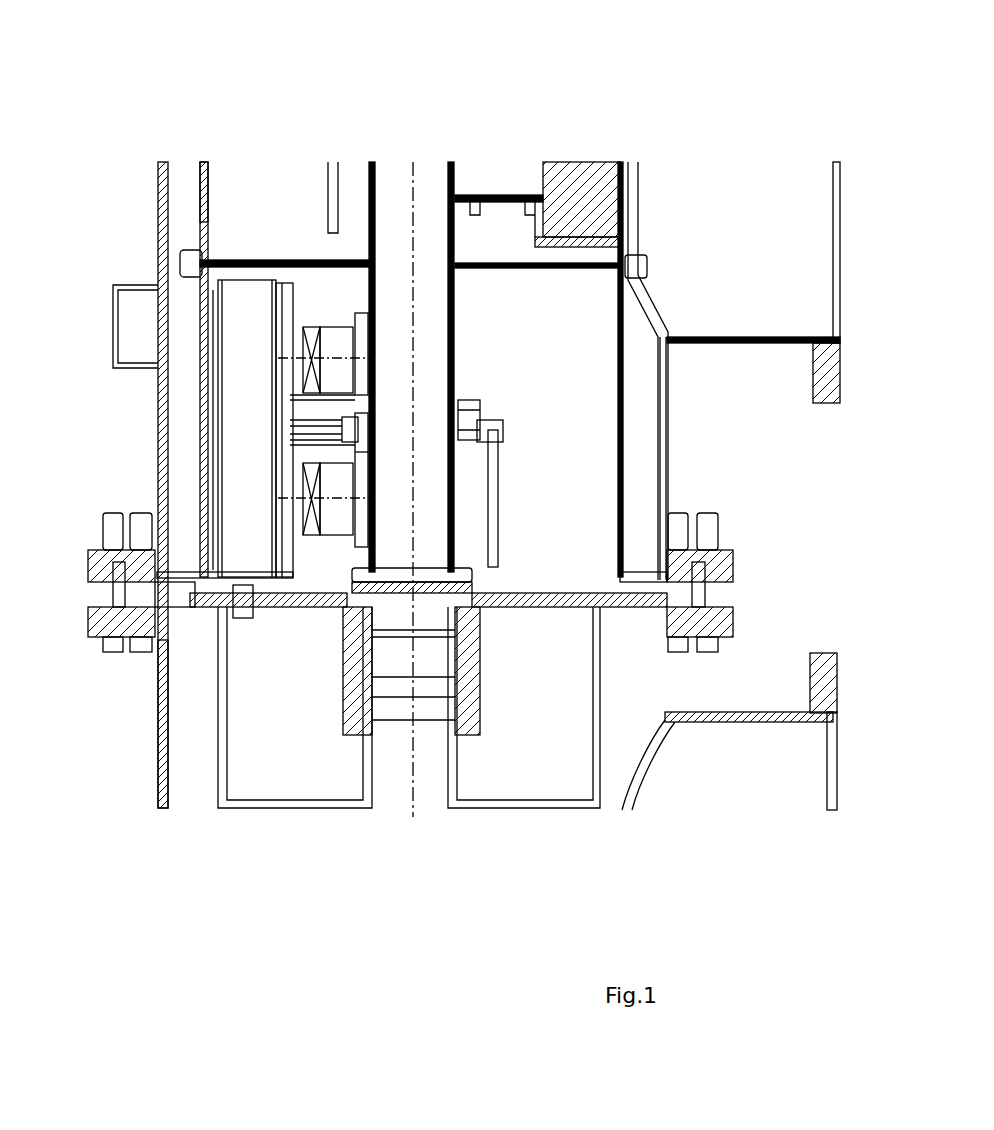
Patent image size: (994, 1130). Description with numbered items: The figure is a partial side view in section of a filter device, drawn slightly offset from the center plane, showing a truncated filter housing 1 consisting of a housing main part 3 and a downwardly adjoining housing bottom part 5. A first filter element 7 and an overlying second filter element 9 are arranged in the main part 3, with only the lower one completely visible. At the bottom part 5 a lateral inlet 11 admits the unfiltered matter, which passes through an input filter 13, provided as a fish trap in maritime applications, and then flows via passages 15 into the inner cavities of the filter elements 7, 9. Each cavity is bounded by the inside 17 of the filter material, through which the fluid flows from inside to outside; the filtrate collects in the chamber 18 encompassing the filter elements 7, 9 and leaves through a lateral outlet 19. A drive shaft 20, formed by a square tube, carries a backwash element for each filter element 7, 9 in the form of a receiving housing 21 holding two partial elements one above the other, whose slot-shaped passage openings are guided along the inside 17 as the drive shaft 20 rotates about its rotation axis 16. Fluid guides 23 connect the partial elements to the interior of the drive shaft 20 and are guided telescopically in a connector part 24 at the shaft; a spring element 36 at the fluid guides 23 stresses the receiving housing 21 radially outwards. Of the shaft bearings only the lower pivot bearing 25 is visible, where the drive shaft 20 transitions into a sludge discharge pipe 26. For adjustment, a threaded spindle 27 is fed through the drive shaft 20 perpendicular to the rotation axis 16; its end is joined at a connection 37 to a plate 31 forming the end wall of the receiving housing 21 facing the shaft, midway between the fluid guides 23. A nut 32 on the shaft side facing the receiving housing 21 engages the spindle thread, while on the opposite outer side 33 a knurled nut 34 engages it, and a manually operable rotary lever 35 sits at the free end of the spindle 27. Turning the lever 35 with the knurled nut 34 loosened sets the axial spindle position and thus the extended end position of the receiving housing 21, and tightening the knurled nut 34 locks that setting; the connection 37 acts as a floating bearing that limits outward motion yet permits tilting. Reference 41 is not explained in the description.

The filter housing 1 is at (125, 422).
The housing main part 3 is at (158, 262).
The housing bottom part 5 is at (157, 705).
The first filter element 7 is at (620, 312).
The second filter element 9 is at (205, 222).
The lateral inlet 11 is at (783, 725).
The input filter 13 is at (527, 808).
The passages 15 is at (535, 607).
The rotation axis 16 is at (410, 770).
The inside of filter material 17 is at (208, 190).
The chamber 18 is at (645, 390).
The lateral outlet 19 is at (770, 335).
The drive shaft 20 is at (437, 292).
The receiving housing 21 is at (241, 310).
The fluid guide 23 is at (297, 328).
The connector part 24 is at (370, 378).
The lower pivot bearing 25 is at (355, 640).
The sludge discharge pipe 26 is at (447, 763).
The threaded spindle 27 is at (345, 410).
The plate 31 is at (287, 548).
The nut 32 is at (358, 438).
The opposite outer side 33 is at (455, 305).
The knurled nut 34 is at (470, 418).
The rotary lever 35 is at (500, 530).
The spring element 36 is at (320, 345).
The connection 37 is at (292, 430).
The gap 41 is at (212, 485).